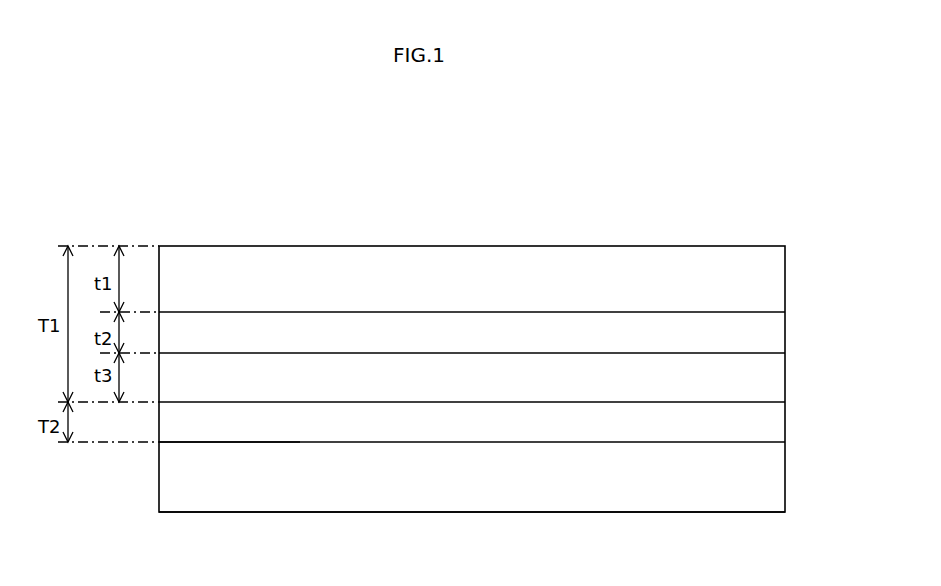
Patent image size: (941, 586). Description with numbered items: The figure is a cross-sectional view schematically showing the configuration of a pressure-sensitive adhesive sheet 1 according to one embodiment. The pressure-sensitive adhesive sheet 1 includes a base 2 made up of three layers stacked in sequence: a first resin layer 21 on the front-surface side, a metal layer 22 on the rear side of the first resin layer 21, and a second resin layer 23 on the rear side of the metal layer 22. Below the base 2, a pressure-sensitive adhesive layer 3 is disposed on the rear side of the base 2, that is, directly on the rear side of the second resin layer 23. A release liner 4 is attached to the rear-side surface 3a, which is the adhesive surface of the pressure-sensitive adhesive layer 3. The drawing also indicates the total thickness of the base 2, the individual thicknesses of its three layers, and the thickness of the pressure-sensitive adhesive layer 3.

The pressure-sensitive adhesive sheet 1 is at (604, 226).
The base 2 is at (516, 335).
The first resin layer 21 is at (773, 273).
The metal layer 22 is at (773, 328).
The second resin layer 23 is at (502, 391).
The pressure-sensitive adhesive layer 3 is at (773, 426).
The rear-side surface 3a is at (189, 442).
The release liner 4 is at (773, 489).